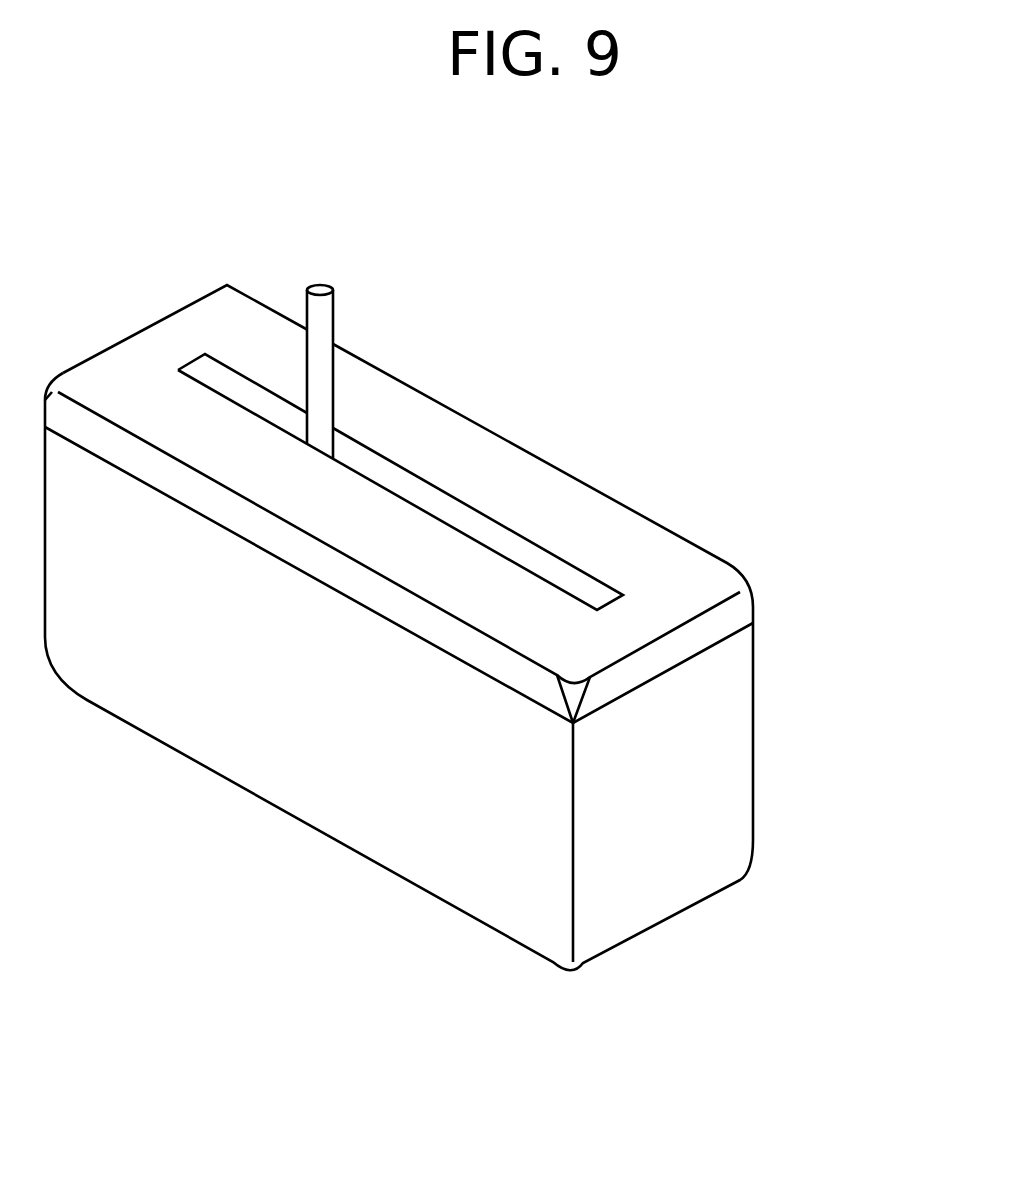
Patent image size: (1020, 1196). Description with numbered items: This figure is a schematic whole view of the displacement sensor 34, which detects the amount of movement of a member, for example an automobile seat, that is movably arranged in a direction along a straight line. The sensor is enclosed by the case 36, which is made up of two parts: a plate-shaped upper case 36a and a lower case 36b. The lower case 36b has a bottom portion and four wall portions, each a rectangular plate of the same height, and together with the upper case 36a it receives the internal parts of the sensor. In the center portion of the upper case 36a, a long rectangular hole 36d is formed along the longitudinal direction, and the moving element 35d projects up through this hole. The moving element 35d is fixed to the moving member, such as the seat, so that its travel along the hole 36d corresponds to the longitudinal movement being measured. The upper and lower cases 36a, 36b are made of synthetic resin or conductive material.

The displacement sensor 34 is at (488, 621).
The moving element 35d is at (323, 320).
The case 36 is at (488, 627).
The upper case 36a is at (740, 608).
The lower case 36b is at (738, 703).
The long rectangular hole 36d is at (555, 578).